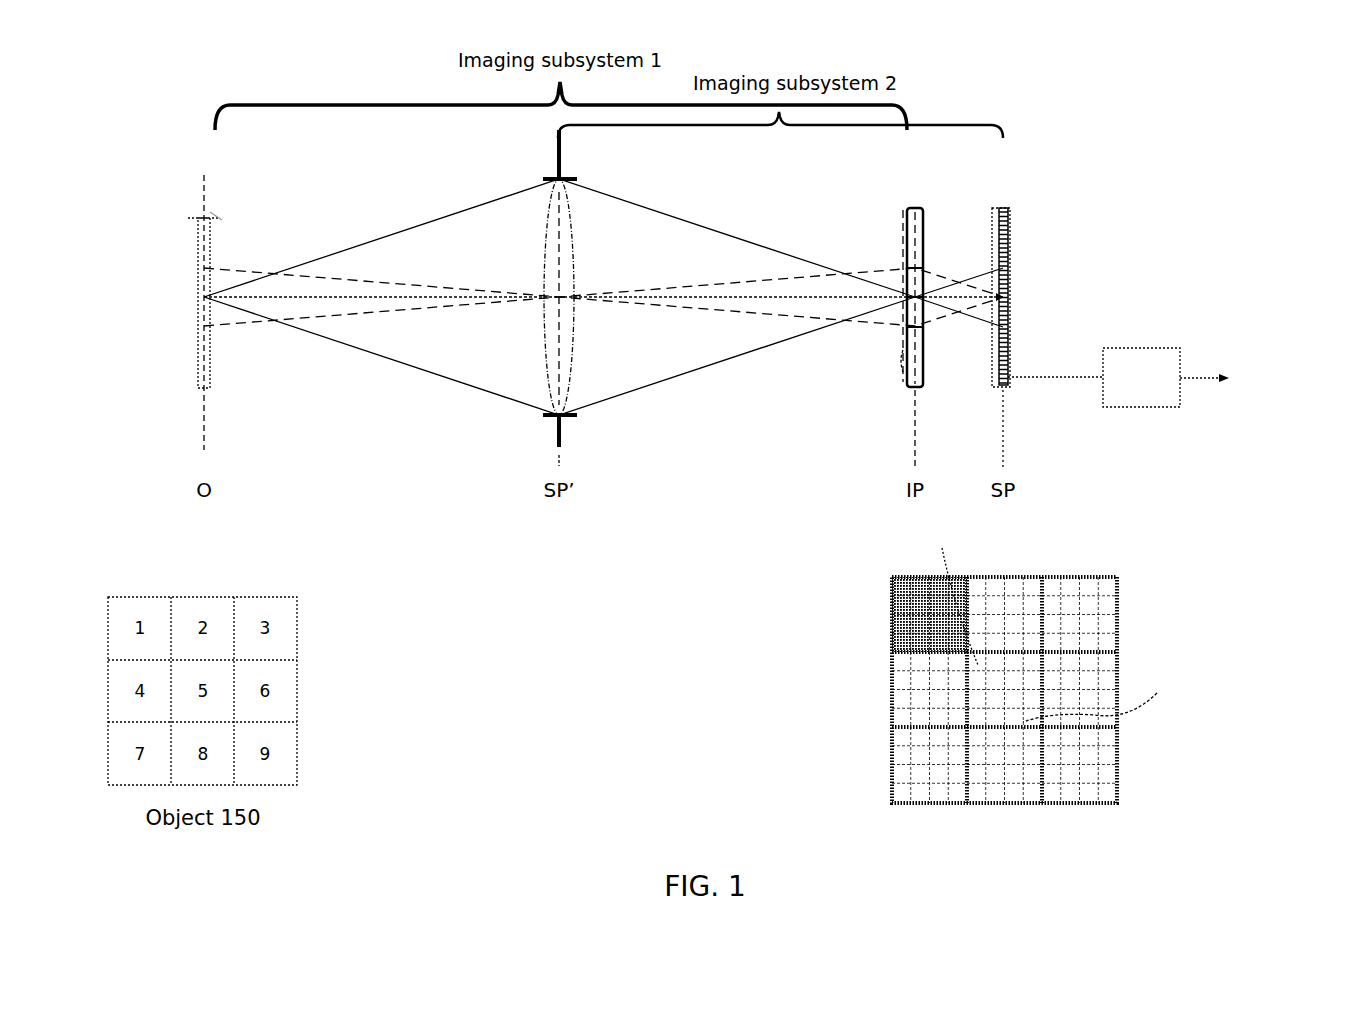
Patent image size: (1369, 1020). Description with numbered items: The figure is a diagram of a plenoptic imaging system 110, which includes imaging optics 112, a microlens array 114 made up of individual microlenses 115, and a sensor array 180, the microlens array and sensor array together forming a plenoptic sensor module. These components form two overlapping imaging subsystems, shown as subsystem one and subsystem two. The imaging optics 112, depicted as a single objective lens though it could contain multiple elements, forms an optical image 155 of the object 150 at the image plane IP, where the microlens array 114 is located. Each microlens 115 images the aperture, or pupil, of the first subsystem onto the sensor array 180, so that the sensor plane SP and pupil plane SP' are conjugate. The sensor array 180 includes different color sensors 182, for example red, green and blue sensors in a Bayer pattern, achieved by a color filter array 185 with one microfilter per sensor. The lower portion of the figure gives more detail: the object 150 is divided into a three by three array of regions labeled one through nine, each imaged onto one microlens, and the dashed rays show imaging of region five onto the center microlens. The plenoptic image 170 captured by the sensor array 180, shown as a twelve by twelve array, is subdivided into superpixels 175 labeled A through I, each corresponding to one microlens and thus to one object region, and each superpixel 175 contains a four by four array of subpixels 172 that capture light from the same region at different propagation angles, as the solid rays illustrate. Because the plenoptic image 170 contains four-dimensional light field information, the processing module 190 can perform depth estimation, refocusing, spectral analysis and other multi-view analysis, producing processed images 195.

The plenoptic imaging system 110 is at (1060, 178).
The imaging optics 112 is at (548, 215).
The microlens array 114 is at (915, 285).
The microlens 115 is at (903, 228).
The object 150 is at (210, 252).
The optical image 155 is at (905, 368).
The plenoptic image 170 is at (997, 283).
The subpixel 172 is at (1105, 598).
The superpixel 175 is at (886, 618).
The sensor array 180 is at (1016, 313).
The color sensor 182 is at (1010, 240).
The color filter array 185 is at (1003, 208).
The processing module 190 is at (1094, 377).
The processed images 195 is at (1270, 377).